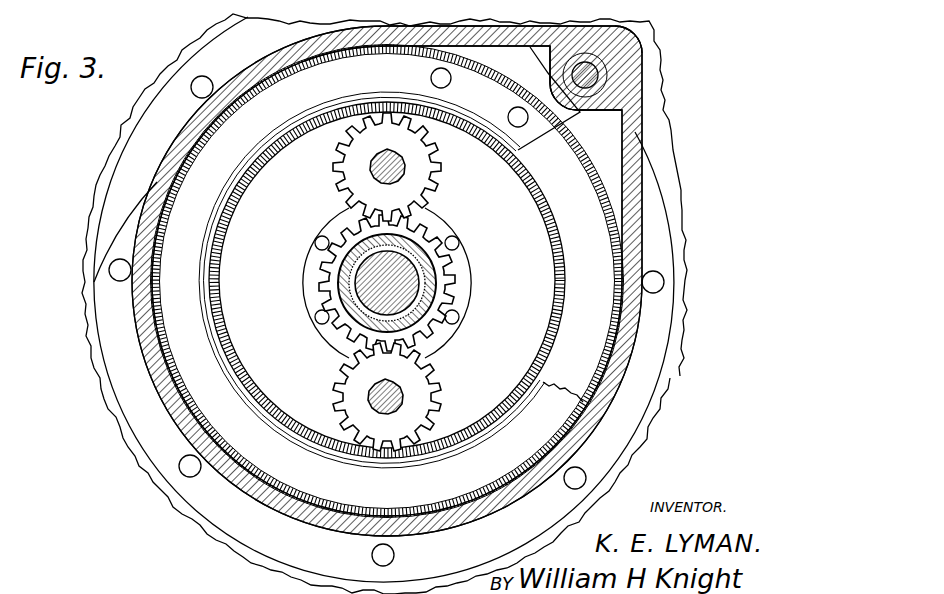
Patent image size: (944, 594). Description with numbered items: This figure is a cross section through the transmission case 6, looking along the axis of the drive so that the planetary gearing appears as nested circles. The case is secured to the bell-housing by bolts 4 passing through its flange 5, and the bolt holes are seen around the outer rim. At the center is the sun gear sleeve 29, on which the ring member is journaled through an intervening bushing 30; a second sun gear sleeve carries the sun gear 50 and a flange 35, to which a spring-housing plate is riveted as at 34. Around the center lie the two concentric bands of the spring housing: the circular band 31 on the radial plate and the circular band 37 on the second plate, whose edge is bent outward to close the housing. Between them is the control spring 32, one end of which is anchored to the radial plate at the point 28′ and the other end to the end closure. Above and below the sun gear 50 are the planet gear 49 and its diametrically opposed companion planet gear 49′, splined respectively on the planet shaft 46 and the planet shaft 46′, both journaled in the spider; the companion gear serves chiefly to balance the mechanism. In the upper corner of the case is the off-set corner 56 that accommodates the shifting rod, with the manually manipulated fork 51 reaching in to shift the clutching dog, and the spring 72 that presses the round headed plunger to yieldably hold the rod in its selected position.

The bolts 4 is at (370, 283).
The flange 5 is at (664, 336).
The transmission case 6 is at (641, 213).
The spring anchor point 28′ is at (517, 116).
The sun gear sleeve 29 is at (447, 296).
The bushing 30 is at (441, 283).
The circular band 31 is at (157, 182).
The control spring 32 is at (195, 183).
The rivets 34 is at (584, 70).
The flange 35 is at (315, 268).
The circular band 37 is at (542, 193).
The planet shaft 46 is at (407, 165).
The planet shaft 46′ is at (407, 395).
The planet gear 49 is at (365, 162).
The companion planet gear 49′ is at (356, 382).
The sun gear 50 is at (462, 262).
The fork 51 is at (572, 116).
The off-set corner 56 is at (642, 100).
The spring 72 is at (642, 56).